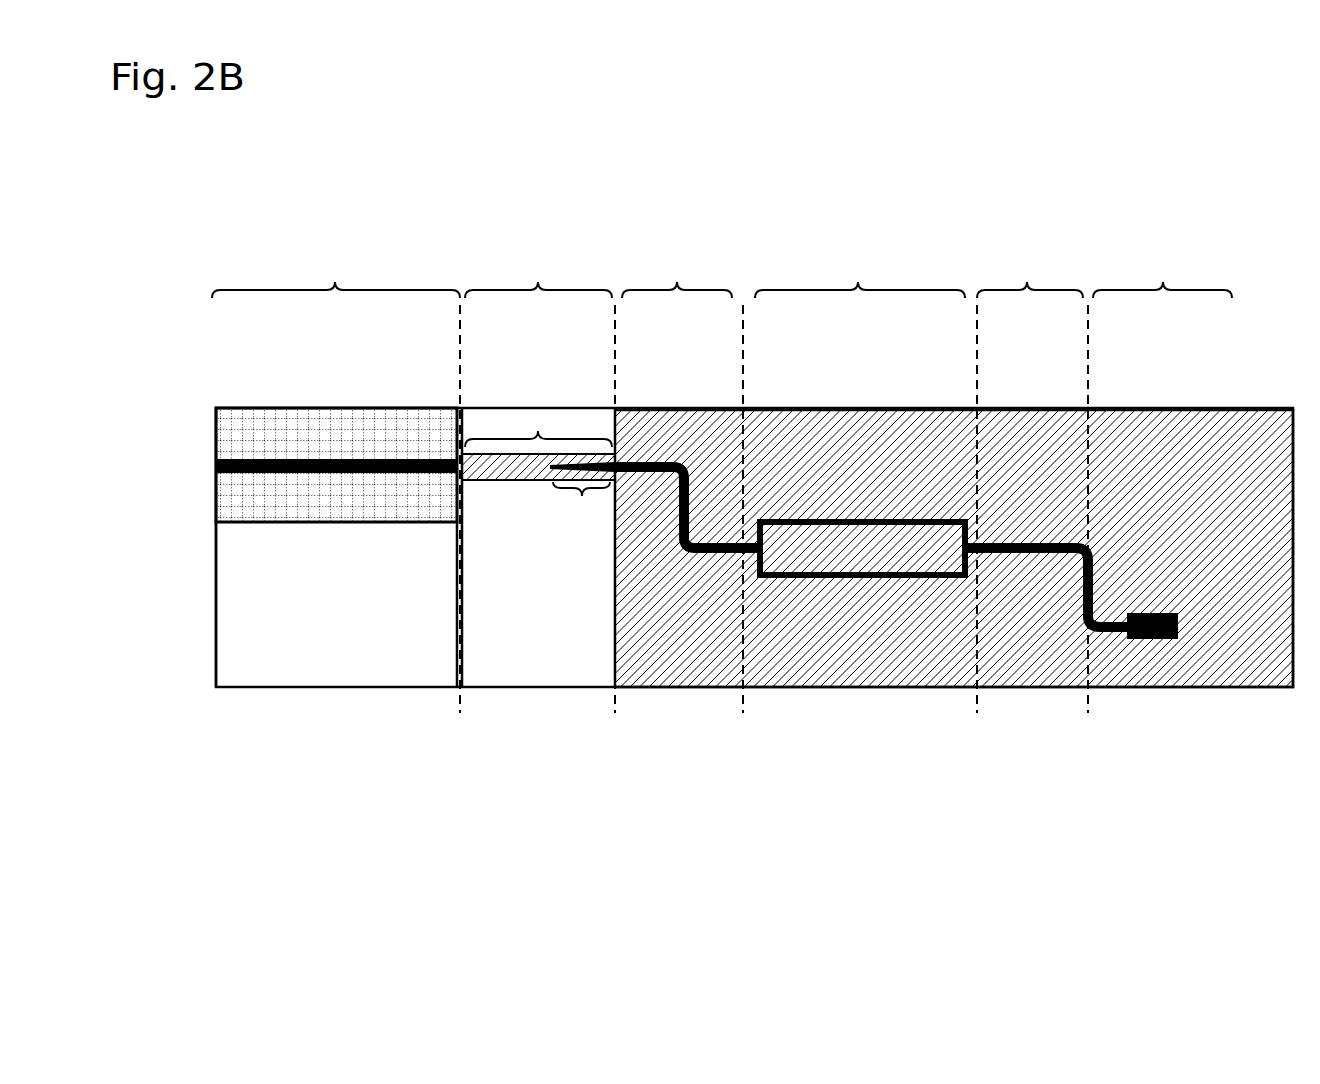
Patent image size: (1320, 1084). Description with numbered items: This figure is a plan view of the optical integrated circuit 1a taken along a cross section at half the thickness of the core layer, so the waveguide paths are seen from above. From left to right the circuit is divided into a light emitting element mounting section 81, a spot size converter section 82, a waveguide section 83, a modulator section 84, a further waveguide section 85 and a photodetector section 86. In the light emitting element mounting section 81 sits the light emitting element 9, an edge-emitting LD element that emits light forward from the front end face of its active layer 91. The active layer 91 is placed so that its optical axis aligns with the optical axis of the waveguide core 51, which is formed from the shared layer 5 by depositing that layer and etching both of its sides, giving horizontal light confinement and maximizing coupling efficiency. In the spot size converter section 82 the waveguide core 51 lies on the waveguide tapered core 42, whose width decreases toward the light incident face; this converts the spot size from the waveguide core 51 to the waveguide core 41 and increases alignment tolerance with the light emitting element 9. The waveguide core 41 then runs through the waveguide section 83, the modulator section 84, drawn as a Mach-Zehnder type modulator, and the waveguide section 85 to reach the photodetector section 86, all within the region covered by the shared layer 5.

The optical integrated circuit 1a is at (988, 183).
The shared layer 5 is at (818, 420).
The light emitting element 9 is at (365, 432).
The active layer 91 is at (216, 467).
The waveguide core 51 is at (540, 432).
The waveguide tapered core 42 is at (579, 497).
The waveguide core 41 is at (1002, 553).
The light emitting element mounting section 81 is at (336, 273).
The spot size converter section 82 is at (538, 274).
The waveguide section 83 is at (677, 273).
The modulator section 84 is at (860, 273).
The waveguide section 85 is at (1030, 273).
The photodetector section 86 is at (1162, 273).